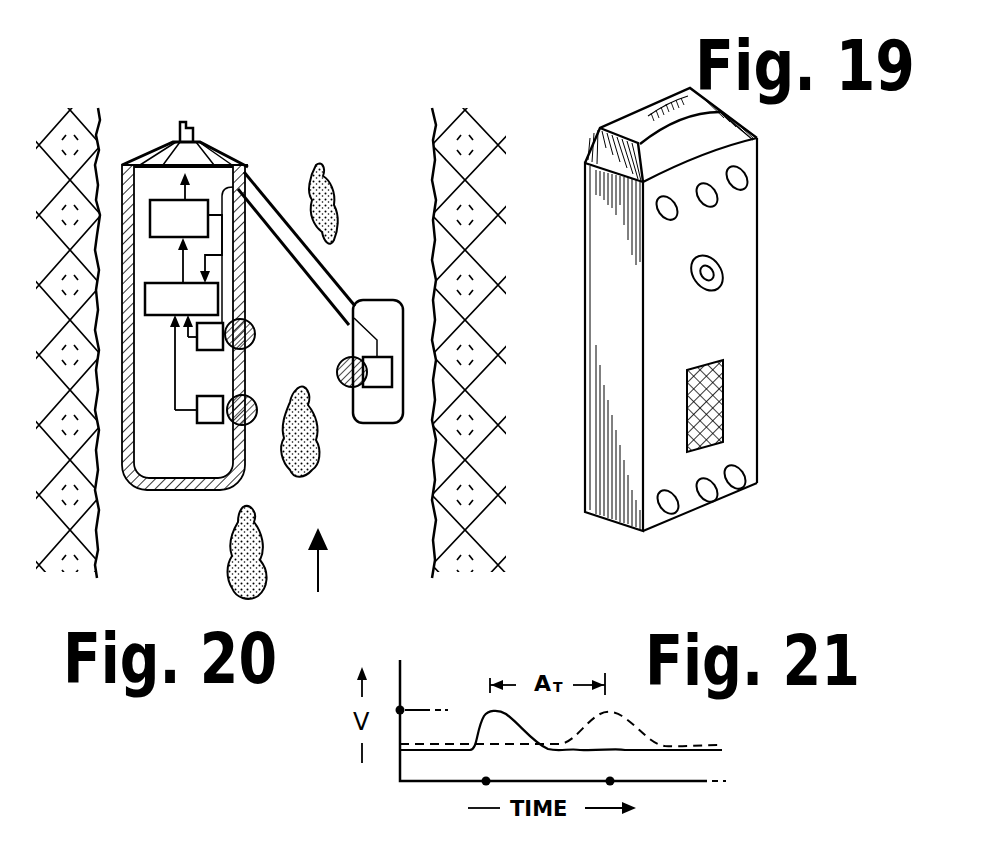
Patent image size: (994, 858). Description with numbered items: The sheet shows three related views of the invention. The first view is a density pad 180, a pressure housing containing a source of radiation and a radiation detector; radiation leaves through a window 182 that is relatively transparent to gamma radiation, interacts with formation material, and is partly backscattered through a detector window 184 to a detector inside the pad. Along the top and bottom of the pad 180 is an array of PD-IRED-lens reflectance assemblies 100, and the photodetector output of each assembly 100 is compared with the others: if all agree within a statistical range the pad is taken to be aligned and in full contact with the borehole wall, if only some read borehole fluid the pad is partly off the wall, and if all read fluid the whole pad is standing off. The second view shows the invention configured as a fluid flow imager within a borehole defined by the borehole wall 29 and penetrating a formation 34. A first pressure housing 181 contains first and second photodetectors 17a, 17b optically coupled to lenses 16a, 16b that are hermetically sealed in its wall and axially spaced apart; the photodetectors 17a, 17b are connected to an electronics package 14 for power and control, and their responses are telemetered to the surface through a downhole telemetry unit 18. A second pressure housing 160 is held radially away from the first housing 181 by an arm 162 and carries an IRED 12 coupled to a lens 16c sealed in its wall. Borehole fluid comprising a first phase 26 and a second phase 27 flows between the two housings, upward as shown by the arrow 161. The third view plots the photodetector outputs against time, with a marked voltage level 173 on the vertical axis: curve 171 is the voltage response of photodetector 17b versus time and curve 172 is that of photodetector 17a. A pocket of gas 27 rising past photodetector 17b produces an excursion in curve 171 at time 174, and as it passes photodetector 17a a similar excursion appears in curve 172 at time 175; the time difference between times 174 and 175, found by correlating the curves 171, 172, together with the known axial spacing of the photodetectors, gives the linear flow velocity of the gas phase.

In FIG. 20, the IRED 12 is at (388, 388).
In FIG. 20, the electronics package 14 is at (162, 318).
In FIG. 20, the lens 16a is at (256, 338).
In FIG. 20, the lens 16b is at (247, 397).
In FIG. 20, the lens 16c is at (348, 407).
In FIG. 20, the first photodetector (PD1) 17a is at (213, 352).
In FIG. 20, the second photodetector (PD2) 17b is at (199, 423).
In FIG. 20, the downhole telemetry unit 18 is at (163, 238).
In FIG. 20, the first phase 26 is at (399, 508).
In FIG. 20, the second phase 27 is at (342, 205).
In FIG. 20, the borehole wall 29 is at (432, 200).
In FIG. 20, the formation 34 is at (79, 398).
In FIG. 19, the PD-IRED-lens reflectance assemblies 100 is at (675, 218).
In FIG. 20, the second pressure housing 160 is at (391, 300).
In FIG. 20, the arrow 161 is at (319, 548).
In FIG. 20, the arm 162 is at (317, 291).
In FIG. 21, the curve 171 is at (520, 720).
In FIG. 21, the curve 172 is at (620, 717).
In FIG. 21, the threshold level 173 is at (403, 708).
In FIG. 21, the time 174 is at (489, 779).
In FIG. 21, the time 175 is at (613, 779).
In FIG. 19, the density pad 180 is at (733, 303).
In FIG. 20, the first pressure housing 181 is at (163, 493).
In FIG. 19, the window 182 is at (693, 292).
In FIG. 19, the detector window 184 is at (723, 407).